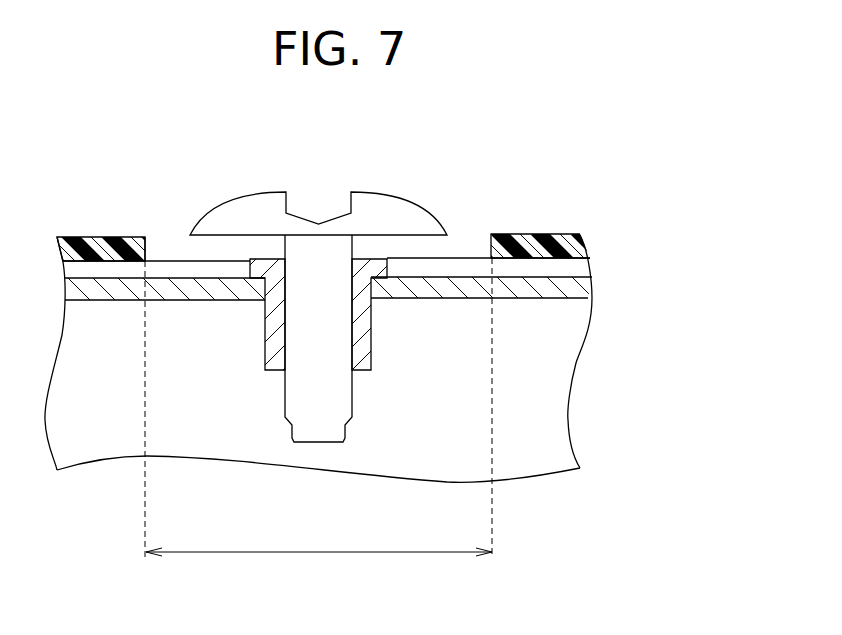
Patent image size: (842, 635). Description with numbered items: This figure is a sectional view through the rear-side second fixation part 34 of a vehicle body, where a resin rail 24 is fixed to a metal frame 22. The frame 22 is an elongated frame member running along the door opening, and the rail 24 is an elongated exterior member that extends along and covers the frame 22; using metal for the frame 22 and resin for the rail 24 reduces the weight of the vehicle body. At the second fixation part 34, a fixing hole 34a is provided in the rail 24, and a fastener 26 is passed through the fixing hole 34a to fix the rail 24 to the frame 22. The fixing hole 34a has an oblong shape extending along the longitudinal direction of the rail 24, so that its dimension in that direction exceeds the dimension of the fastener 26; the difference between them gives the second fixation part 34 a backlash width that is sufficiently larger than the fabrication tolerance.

The frame 22 is at (577, 288).
The rail 24 is at (575, 249).
The fastener 26 is at (383, 208).
The second fixation part 34 is at (523, 133).
The fixing hole 34a is at (147, 246).